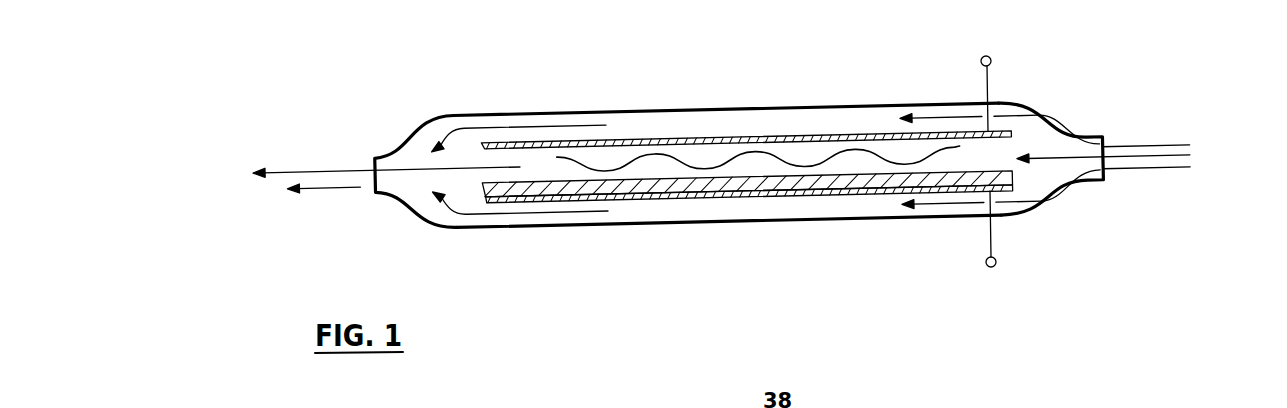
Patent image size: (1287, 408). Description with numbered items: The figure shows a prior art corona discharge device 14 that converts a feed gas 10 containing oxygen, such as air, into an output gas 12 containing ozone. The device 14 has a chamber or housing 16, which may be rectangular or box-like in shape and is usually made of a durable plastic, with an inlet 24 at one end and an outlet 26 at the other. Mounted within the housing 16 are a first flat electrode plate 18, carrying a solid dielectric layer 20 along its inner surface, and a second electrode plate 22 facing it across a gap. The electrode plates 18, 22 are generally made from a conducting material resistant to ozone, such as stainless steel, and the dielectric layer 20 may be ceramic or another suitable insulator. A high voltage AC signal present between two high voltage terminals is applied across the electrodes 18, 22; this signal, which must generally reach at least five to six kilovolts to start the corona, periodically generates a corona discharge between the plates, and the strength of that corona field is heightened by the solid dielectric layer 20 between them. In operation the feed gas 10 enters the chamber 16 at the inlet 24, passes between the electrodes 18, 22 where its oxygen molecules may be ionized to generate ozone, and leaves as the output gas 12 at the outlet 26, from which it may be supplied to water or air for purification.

The feed gas 10 is at (1145, 170).
The output gas 12 is at (322, 188).
The corona discharge device 14 is at (739, 167).
The housing 16 is at (523, 114).
The first flat electrode plate 18 is at (680, 193).
The solid dielectric layer 20 is at (773, 180).
The second electrode plate 22 is at (767, 138).
The inlet 24 is at (1087, 137).
The outlet 26 is at (393, 152).